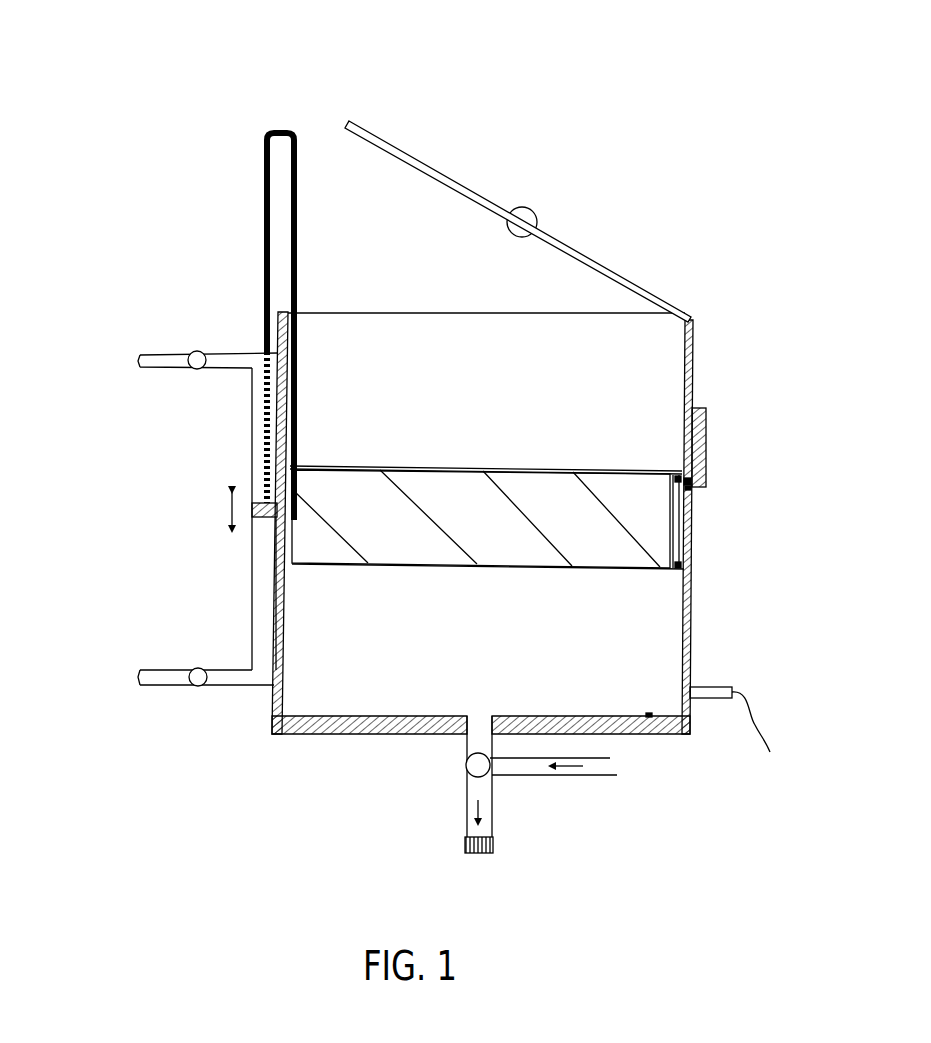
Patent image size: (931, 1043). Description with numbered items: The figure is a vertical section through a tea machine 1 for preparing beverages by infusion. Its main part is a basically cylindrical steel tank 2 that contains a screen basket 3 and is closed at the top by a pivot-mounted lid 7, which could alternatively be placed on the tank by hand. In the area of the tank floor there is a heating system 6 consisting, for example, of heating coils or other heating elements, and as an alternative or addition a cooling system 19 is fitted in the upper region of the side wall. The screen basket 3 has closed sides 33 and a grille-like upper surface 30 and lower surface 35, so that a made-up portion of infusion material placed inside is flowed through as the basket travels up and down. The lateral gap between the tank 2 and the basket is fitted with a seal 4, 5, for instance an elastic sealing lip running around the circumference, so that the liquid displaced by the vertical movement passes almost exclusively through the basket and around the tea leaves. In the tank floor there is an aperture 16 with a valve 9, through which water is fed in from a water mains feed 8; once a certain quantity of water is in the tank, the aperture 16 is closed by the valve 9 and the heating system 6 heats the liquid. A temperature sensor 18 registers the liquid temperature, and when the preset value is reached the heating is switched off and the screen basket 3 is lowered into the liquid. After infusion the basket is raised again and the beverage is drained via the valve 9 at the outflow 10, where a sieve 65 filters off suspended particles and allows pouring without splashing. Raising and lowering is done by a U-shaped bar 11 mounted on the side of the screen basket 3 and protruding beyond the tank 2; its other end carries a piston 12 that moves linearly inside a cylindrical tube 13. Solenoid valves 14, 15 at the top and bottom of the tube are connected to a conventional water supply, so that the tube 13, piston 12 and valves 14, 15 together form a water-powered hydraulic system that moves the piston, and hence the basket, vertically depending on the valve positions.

The tea machine 1 is at (670, 172).
The tank 2 is at (697, 400).
The screen basket 3 is at (643, 512).
The seal 4 is at (690, 560).
The seal 5 is at (692, 472).
The heating system 6 is at (693, 482).
The lid 7 is at (457, 183).
The water mains feed 8 is at (552, 767).
The valve 9 is at (466, 762).
The outflow 10 is at (467, 805).
The U-shaped bar 11 is at (273, 133).
The piston 12 is at (252, 508).
The cylindrical tube 13 is at (223, 357).
The solenoid valve 14 is at (198, 690).
The solenoid valve 15 is at (190, 352).
The aperture 16 is at (478, 720).
The temperature sensor 18 is at (708, 698).
The cooling system 19 is at (707, 420).
The upper surface 30 is at (703, 457).
The closed sides 33 is at (690, 533).
The lower surface 35 is at (603, 570).
The sieve 65 is at (465, 850).